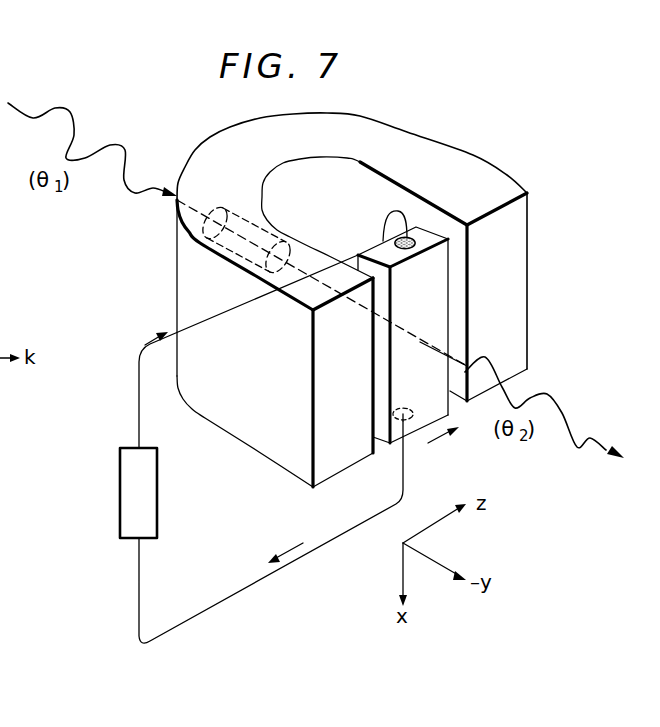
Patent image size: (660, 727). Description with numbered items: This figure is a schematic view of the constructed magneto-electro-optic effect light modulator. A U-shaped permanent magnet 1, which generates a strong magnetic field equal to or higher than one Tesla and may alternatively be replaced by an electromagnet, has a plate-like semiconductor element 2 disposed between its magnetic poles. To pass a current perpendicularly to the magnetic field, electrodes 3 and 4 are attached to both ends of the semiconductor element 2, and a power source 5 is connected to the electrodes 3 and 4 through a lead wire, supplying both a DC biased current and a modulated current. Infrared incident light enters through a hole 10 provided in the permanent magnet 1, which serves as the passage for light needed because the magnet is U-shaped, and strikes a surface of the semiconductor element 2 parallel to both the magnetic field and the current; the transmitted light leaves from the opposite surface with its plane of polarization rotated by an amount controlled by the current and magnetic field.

The permanent magnet 1 is at (443, 153).
The semiconductor element 2 is at (440, 331).
The electrode 3 is at (414, 239).
The electrode 4 is at (404, 407).
The power source 5 is at (158, 480).
The hole 10 is at (240, 217).